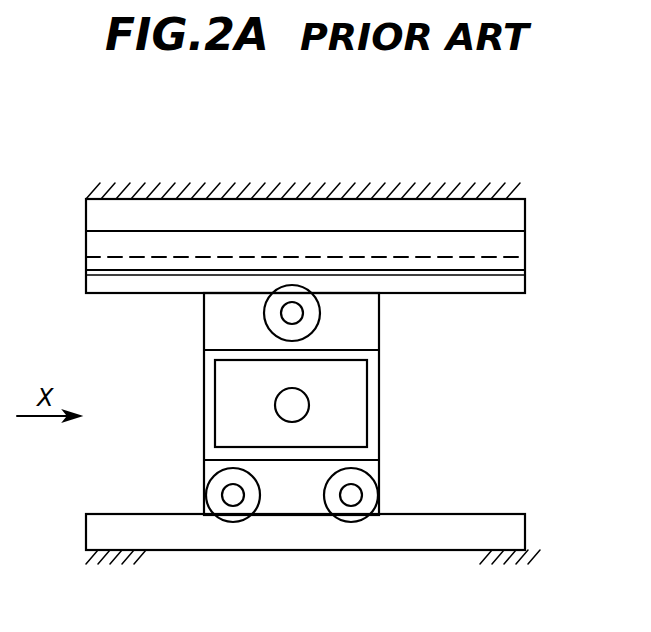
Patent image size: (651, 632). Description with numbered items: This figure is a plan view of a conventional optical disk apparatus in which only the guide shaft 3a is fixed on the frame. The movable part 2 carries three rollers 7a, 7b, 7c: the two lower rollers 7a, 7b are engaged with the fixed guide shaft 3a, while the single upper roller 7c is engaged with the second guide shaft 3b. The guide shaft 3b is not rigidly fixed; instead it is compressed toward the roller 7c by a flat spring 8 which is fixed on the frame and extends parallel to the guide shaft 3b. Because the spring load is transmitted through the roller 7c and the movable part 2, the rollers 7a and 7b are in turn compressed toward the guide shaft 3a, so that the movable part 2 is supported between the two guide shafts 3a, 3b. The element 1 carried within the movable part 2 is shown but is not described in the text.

The flat spring 8 is at (518, 217).
The guide shaft 3b is at (497, 287).
The movable part 2 is at (204, 391).
The moving body / head unit 1 is at (360, 385).
The roller 7c is at (300, 287).
The roller 7a is at (235, 513).
The roller 7b is at (352, 510).
The guide shaft 3a is at (425, 540).